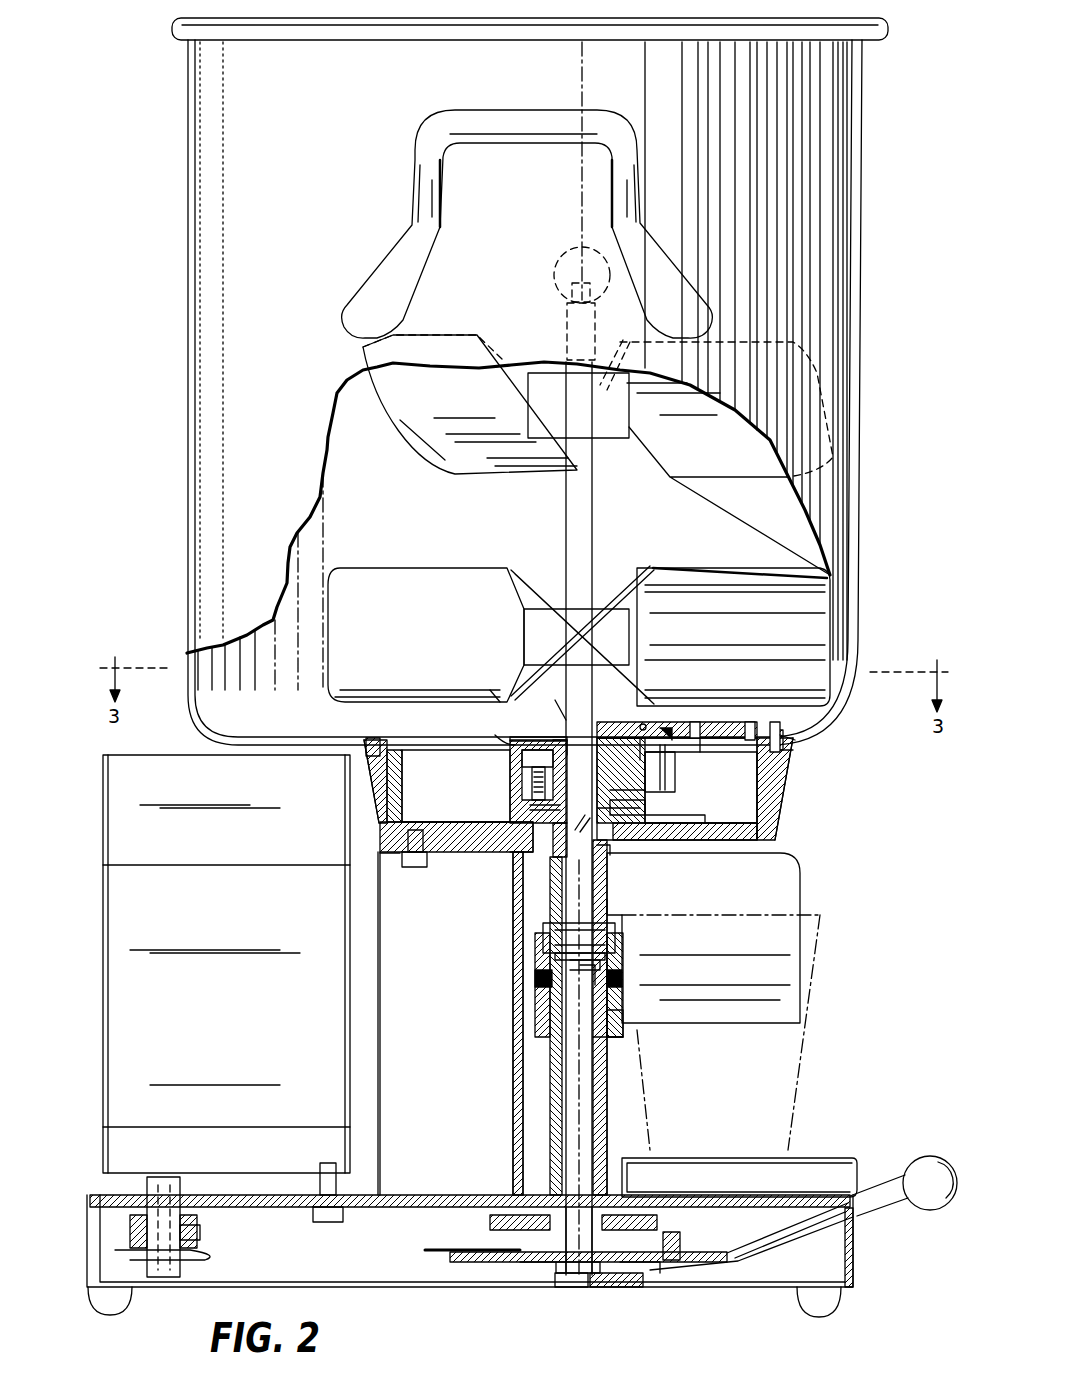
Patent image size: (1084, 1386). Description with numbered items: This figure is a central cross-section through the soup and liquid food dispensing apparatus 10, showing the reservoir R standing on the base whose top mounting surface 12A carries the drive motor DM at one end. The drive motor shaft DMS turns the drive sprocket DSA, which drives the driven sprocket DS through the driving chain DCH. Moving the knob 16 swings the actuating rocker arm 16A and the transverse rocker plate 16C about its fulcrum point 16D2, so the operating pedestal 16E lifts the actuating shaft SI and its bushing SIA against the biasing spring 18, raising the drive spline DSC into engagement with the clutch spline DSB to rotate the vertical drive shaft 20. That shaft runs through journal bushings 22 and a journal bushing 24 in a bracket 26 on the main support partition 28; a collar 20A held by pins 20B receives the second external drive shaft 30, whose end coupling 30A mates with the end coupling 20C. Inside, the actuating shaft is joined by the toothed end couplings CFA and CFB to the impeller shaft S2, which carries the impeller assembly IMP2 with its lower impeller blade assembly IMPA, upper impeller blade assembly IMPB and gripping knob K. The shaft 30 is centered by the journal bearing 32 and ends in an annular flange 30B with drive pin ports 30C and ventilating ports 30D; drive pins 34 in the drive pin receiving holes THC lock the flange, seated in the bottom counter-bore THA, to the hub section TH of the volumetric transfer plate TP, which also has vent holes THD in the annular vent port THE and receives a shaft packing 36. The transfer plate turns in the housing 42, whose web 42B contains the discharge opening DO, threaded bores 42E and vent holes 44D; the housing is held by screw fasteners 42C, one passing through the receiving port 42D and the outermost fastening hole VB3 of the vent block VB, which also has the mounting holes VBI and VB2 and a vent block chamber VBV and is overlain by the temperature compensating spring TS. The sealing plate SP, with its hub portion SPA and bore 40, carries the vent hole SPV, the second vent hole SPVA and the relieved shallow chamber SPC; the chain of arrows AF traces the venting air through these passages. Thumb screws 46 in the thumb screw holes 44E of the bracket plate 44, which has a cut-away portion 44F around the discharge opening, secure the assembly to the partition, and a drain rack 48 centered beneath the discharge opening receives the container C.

The soup and liquid food dispensing apparatus 10 is at (898, 532).
The reservoir R is at (866, 352).
The gripping knob K is at (557, 271).
The impeller shaft S2 is at (565, 545).
The upper impeller blade assembly IMPB is at (490, 415).
The impeller IMP2 is at (402, 464).
The lower impeller blade assembly IMPA is at (467, 611).
The drive pin receiving holes THC is at (494, 689).
The housing 42 is at (360, 792).
The volumetric transfer plate TP is at (400, 790).
The web 42B is at (455, 822).
The screw fasteners 42C is at (370, 738).
The receiving port 42D is at (795, 752).
The threaded bores 42E is at (405, 838).
The support plate opening 44E is at (410, 845).
The thumb screws 46 is at (415, 868).
The bracket plate 44 is at (440, 855).
The vent holes 44D is at (510, 855).
The cut-away portion 44F is at (655, 845).
The second external drive shaft 30 is at (577, 966).
The annular flange 30B is at (530, 789).
The drive pin ports 30C is at (520, 762).
The ventilating ports 30D is at (650, 810).
The bottom counter-bore THA is at (528, 808).
The drive pins 34 is at (540, 740).
The shaft packing 36 is at (562, 738).
The bore 40 is at (553, 699).
The hub portion SPA is at (495, 735).
The air flow AF is at (579, 831).
The journal bearing 32 is at (612, 850).
The second vent hole SPVA is at (690, 722).
The vent block VB is at (700, 722).
The mounting hole VB2 is at (752, 722).
The sealing plate SP is at (778, 720).
The outermost fastening hole VB3 is at (840, 720).
The vent block chamber VBV is at (668, 725).
The temperature compensating hold-down spring TS is at (645, 722).
The vent holes THD is at (636, 735).
The vent hole SPV is at (671, 767).
The mounting hole VBI is at (716, 759).
The relieved shallow chamber SPC is at (680, 780).
The annular vent port THE is at (659, 800).
The hub section TH is at (700, 822).
The discharge opening DO is at (717, 934).
The container C is at (800, 1065).
The drain rack 48 is at (818, 980).
The end coupling 20C is at (513, 900).
The vertical drive shaft 20 is at (595, 1160).
The journal bushings 22 is at (640, 1160).
The end coupling 30A is at (540, 932).
The main support partition 28 is at (535, 962).
The pins 20B is at (533, 978).
The mating toothed end coupling CFB is at (610, 935).
The toothed end coupling CFA is at (620, 960).
The collar 20A is at (600, 975).
The journal bushing 24 is at (625, 1010).
The bracket 26 is at (615, 1040).
The drive motor DM is at (227, 1016).
The drive motor shaft DMS is at (165, 1180).
The drive sprocket DSA is at (205, 1245).
The top mounting surface 12A is at (240, 1195).
The driving chain DCH is at (325, 1265).
The driven sprocket DS is at (450, 1248).
The clutch spline DSB is at (640, 1213).
The drive spline DSC is at (680, 1232).
The actuating shaft SI is at (583, 1231).
The bushing SIA is at (555, 1270).
The biasing spring 18 is at (520, 1265).
The operating pedestal 16E is at (570, 1290).
The transverse rocker plate 16C is at (610, 1290).
The fulcrum point 16D2 is at (628, 1290).
The actuating rocker arm 16A is at (795, 1232).
The knob 16 is at (942, 1156).